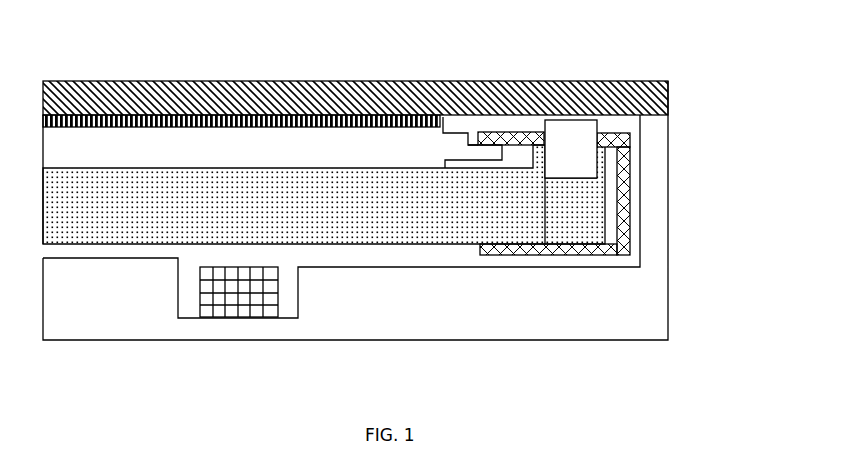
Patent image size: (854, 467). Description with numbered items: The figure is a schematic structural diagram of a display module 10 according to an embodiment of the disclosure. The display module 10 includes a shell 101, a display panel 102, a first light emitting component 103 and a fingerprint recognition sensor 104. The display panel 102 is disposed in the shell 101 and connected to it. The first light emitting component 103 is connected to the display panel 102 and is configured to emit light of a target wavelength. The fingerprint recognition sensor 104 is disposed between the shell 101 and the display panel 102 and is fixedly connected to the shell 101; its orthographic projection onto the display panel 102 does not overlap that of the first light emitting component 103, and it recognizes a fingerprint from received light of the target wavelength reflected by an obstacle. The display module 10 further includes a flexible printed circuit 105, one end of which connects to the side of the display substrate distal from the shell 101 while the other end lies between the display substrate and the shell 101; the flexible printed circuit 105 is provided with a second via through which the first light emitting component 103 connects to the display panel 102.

The display module 10 is at (66, 37).
The shell 101 is at (661, 312).
The display panel 102 is at (256, 145).
The first light emitting component 103 is at (578, 164).
The fingerprint recognition sensor 104 is at (247, 295).
The flexible printed circuit 105 is at (633, 222).